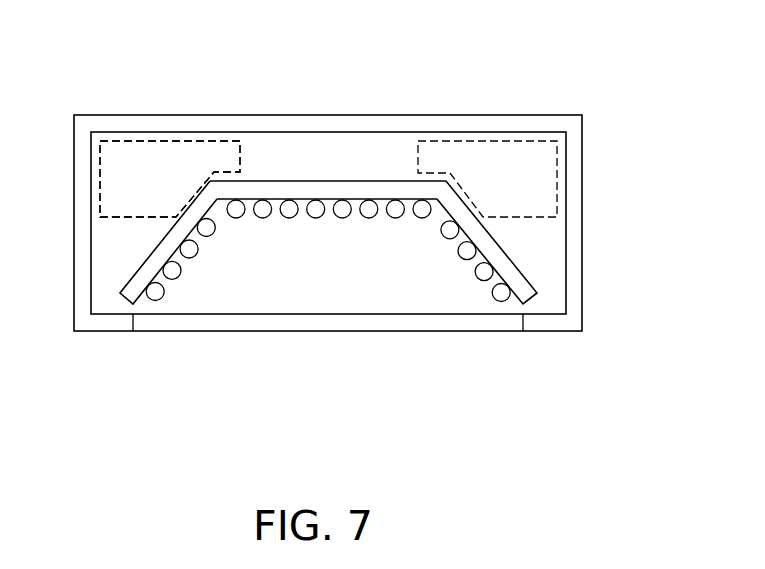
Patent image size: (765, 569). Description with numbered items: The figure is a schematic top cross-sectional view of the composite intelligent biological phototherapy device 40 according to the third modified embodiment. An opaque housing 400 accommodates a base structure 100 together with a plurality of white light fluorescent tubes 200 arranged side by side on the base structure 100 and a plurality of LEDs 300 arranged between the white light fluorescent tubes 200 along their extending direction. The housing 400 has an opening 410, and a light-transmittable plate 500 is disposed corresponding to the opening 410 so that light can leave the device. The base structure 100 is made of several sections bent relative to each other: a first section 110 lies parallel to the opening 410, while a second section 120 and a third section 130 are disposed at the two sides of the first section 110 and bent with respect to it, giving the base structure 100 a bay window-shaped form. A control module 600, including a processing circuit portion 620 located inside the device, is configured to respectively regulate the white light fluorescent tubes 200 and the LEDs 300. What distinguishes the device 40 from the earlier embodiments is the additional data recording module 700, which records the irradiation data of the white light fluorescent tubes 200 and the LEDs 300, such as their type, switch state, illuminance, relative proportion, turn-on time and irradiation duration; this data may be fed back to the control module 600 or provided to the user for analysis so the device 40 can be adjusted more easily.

The composite intelligent biological phototherapy device 40 is at (60, 35).
The base structure 100 is at (331, 190).
The first section 110 is at (337, 193).
The second section 120 is at (146, 275).
The third section 130 is at (497, 255).
The white light fluorescent tubes 200 is at (265, 200).
The LEDs 300 is at (410, 200).
The housing 400 is at (524, 125).
The opening 410 is at (479, 356).
The light-transmittable plate 500 is at (402, 318).
The control module 600 is at (225, 171).
The processing circuit portion 620 is at (170, 179).
The data recording module 700 is at (532, 189).